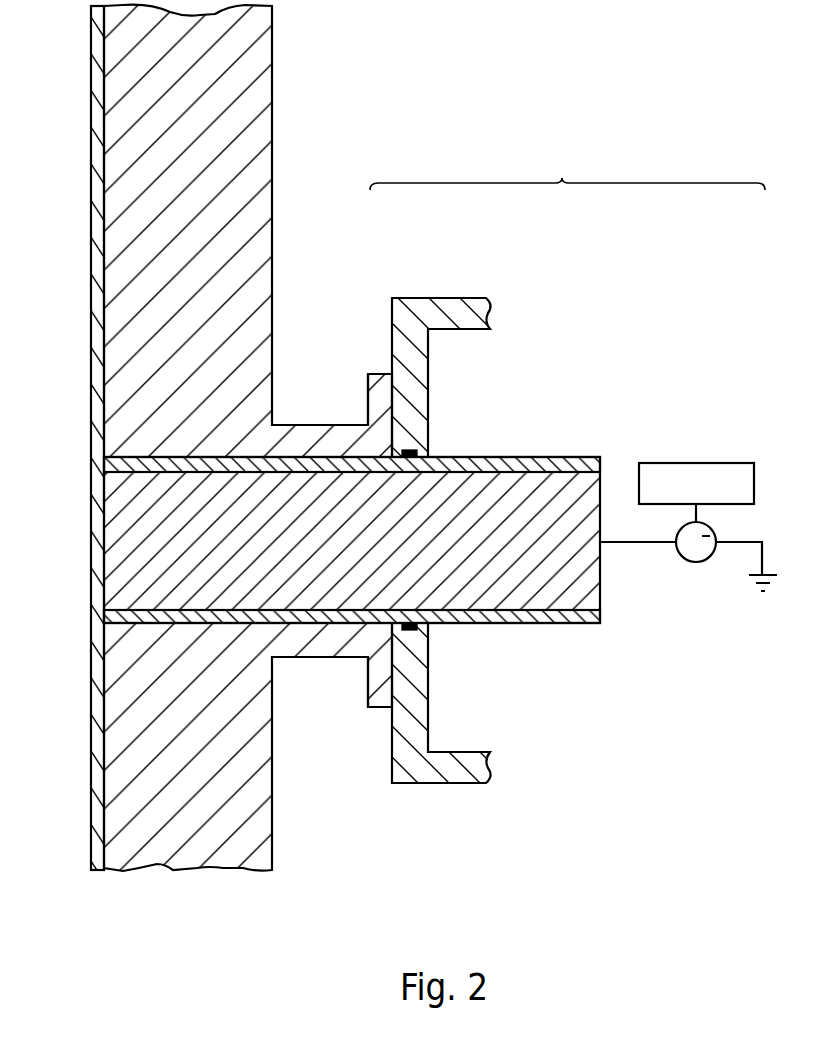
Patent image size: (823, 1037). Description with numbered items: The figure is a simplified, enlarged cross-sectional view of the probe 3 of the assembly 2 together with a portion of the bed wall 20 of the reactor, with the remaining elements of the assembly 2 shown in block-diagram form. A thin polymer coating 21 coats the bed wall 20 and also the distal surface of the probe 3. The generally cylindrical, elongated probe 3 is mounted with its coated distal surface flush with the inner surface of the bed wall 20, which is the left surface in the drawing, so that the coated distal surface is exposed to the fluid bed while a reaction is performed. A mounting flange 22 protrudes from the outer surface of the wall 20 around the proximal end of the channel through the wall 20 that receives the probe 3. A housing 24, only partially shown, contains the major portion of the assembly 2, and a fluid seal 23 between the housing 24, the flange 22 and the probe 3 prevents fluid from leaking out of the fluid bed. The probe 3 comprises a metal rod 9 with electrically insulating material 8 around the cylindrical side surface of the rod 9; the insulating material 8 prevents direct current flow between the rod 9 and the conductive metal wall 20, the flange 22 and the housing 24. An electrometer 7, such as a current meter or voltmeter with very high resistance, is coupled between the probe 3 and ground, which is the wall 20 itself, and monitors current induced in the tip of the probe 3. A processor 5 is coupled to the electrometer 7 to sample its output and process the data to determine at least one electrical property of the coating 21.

The assembly 2 is at (567, 172).
The probe 3 is at (586, 642).
The processor 5 is at (718, 463).
The electrometer 7 is at (696, 562).
The electrically insulating material 8 is at (459, 623).
The metal rod 9 is at (455, 572).
The bed wall 20 is at (275, 121).
The polymer coating 21 is at (91, 333).
The mounting flange 22 is at (366, 406).
The fluid seal 23 is at (411, 450).
The housing 24 is at (445, 298).